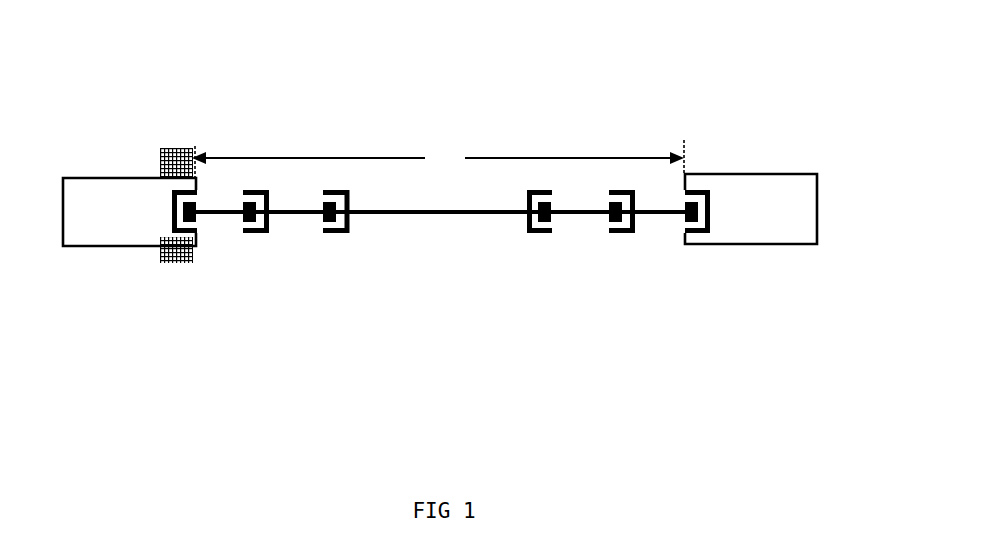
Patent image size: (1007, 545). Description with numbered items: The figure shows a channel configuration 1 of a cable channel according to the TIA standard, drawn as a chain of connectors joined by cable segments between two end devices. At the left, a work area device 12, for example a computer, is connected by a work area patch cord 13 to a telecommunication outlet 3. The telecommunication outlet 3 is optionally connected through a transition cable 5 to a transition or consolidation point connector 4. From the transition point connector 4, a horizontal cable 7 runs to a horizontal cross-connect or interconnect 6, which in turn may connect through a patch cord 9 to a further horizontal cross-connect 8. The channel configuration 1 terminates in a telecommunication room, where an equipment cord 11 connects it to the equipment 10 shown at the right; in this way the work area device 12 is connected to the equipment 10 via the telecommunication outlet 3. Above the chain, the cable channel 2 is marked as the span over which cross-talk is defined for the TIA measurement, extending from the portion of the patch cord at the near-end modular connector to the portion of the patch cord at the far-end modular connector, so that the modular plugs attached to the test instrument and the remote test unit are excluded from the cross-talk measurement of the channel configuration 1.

The channel configuration 1 is at (744, 128).
The cable channel 2 is at (438, 159).
The telecommunication outlet 3 is at (250, 233).
The transition point connector 4 is at (330, 233).
The transition cable 5 is at (292, 215).
The horizontal cross-connect 6 is at (528, 233).
The horizontal cable 7 is at (433, 215).
The further horizontal cross-connect 8 is at (620, 233).
The patch cord 9 is at (578, 215).
The equipment 10 is at (765, 245).
The equipment cord 11 is at (658, 215).
The work area device 12 is at (107, 247).
The work area patch cord 13 is at (210, 216).